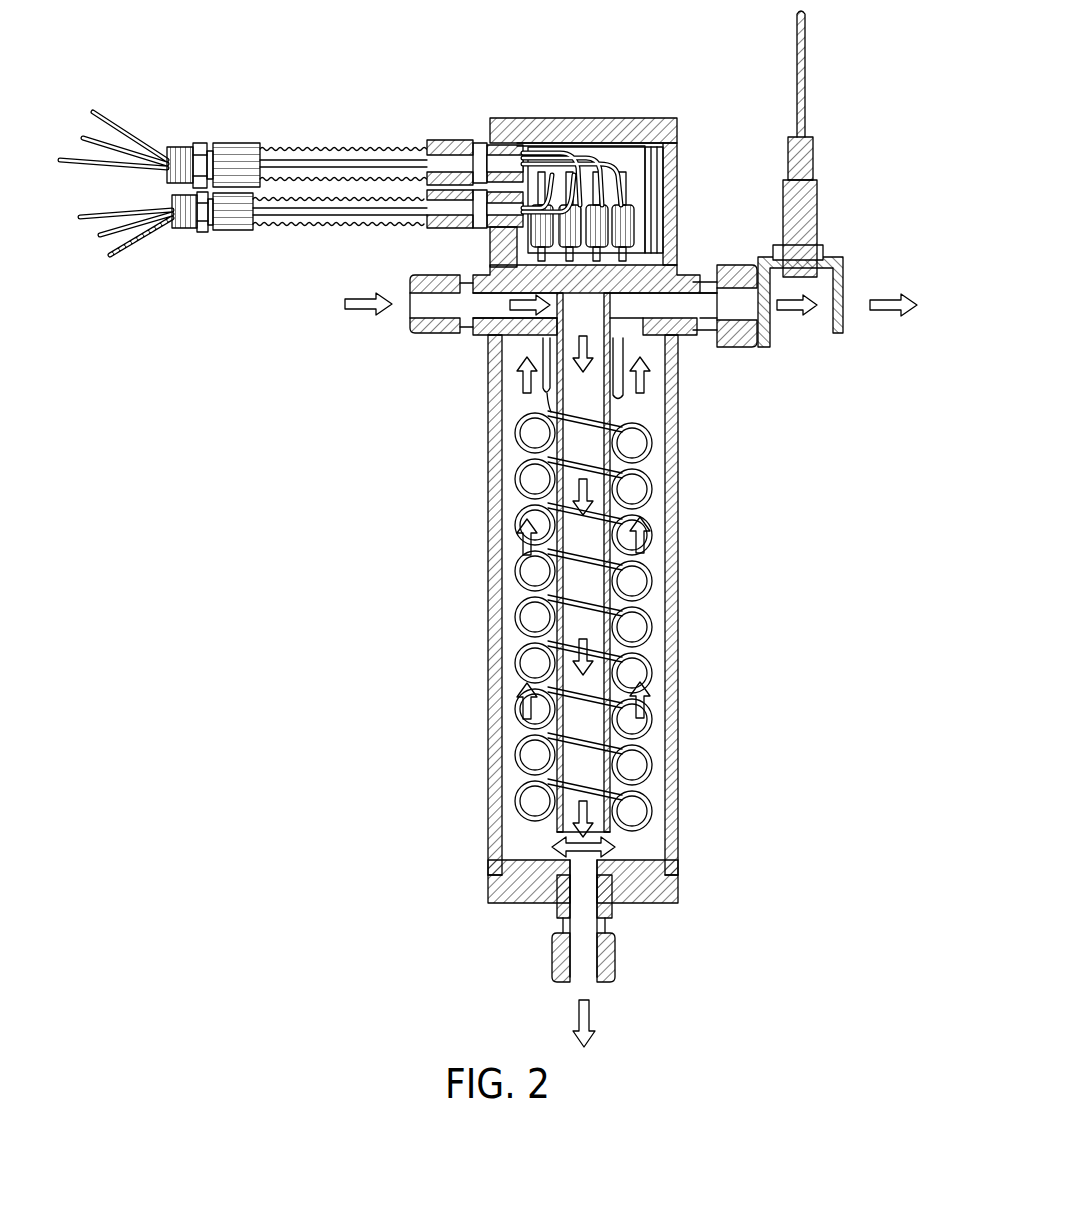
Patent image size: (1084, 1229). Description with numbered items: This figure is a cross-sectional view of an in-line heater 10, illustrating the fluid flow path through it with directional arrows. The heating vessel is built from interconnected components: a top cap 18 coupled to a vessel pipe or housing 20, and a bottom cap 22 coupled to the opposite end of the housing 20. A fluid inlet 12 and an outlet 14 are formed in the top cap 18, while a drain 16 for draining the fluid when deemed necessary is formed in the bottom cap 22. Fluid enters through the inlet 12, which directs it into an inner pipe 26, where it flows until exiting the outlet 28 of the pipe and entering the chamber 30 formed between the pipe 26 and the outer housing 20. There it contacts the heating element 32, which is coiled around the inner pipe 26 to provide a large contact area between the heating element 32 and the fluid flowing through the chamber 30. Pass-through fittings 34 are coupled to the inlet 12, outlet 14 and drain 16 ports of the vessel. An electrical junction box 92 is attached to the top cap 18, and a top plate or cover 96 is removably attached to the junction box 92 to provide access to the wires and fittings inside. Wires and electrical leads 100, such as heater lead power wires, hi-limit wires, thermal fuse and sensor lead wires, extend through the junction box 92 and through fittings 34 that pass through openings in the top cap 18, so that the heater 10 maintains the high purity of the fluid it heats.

The in-line heater 10 is at (400, 622).
The fluid inlet 12 is at (487, 307).
The outlet 14 is at (678, 305).
The drain 16 is at (583, 868).
The top cap 18 is at (497, 282).
The housing 20 is at (489, 690).
The bottom cap 22 is at (650, 893).
The pipe 26 is at (545, 472).
The outlet 28 is at (608, 820).
The chamber 30 is at (517, 838).
The heating element 32 is at (656, 667).
The pass-through fittings 34 is at (450, 138).
The electrical junction box 92 is at (680, 207).
The top plate or cover 96 is at (578, 117).
The wires 100 is at (130, 136).